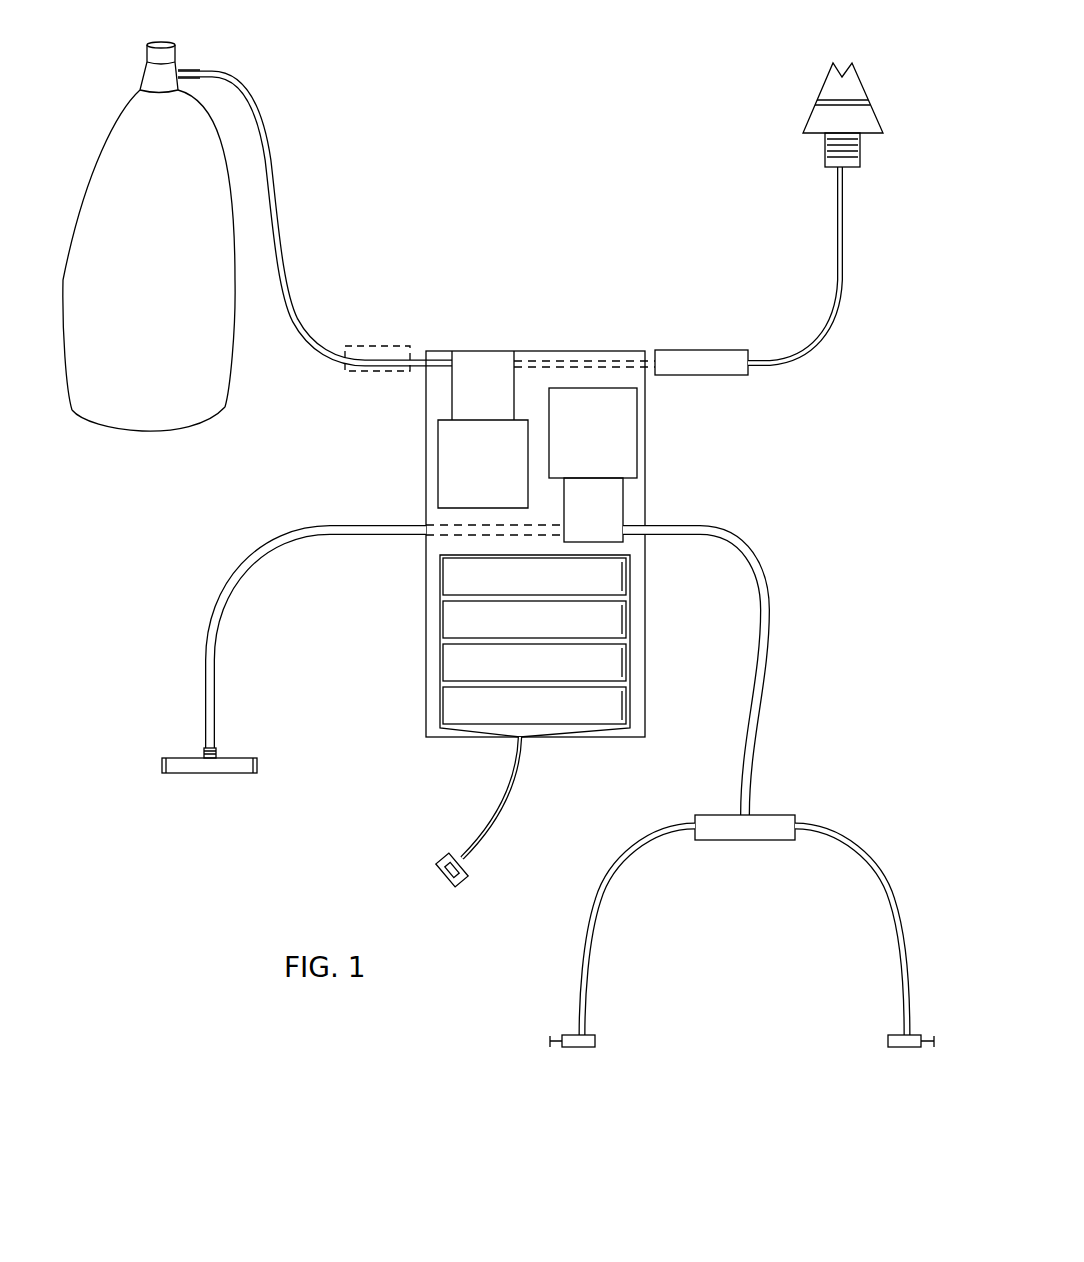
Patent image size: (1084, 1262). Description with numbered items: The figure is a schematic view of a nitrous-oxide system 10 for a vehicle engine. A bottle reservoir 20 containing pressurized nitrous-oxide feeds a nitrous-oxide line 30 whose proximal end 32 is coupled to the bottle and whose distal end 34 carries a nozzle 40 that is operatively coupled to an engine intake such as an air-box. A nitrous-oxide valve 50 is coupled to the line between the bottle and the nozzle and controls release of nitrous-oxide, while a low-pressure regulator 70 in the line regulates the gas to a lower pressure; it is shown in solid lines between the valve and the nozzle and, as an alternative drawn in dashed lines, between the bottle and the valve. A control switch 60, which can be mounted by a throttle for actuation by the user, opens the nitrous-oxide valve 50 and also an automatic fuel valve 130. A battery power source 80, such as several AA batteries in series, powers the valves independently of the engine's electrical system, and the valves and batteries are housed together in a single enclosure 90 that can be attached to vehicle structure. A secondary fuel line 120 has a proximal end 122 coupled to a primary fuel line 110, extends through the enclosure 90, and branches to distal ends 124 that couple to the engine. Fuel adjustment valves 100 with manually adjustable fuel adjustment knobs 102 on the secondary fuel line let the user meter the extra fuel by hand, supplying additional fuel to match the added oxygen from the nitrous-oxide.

The nitrous-oxide system 10 is at (450, 178).
The bottle reservoir 20 is at (127, 433).
The proximal end 32 is at (197, 66).
The nitrous-oxide line 30 is at (280, 197).
The low-pressure regulator 70 is at (380, 346).
The nitrous-oxide valve 50 is at (450, 392).
The automatic fuel valve 130 is at (623, 505).
The battery power source 80 is at (450, 671).
The enclosure 90 is at (424, 728).
The control switch 60 is at (448, 882).
The distal end 34 is at (838, 181).
The nozzle 40 is at (817, 90).
The secondary fuel line 120 is at (212, 638).
The proximal end 122 is at (205, 748).
The primary fuel line 110 is at (195, 768).
The distal ends 124 is at (582, 1022).
The fuel adjustment valves 100 is at (578, 1047).
The fuel adjustment knobs 102 is at (548, 1036).